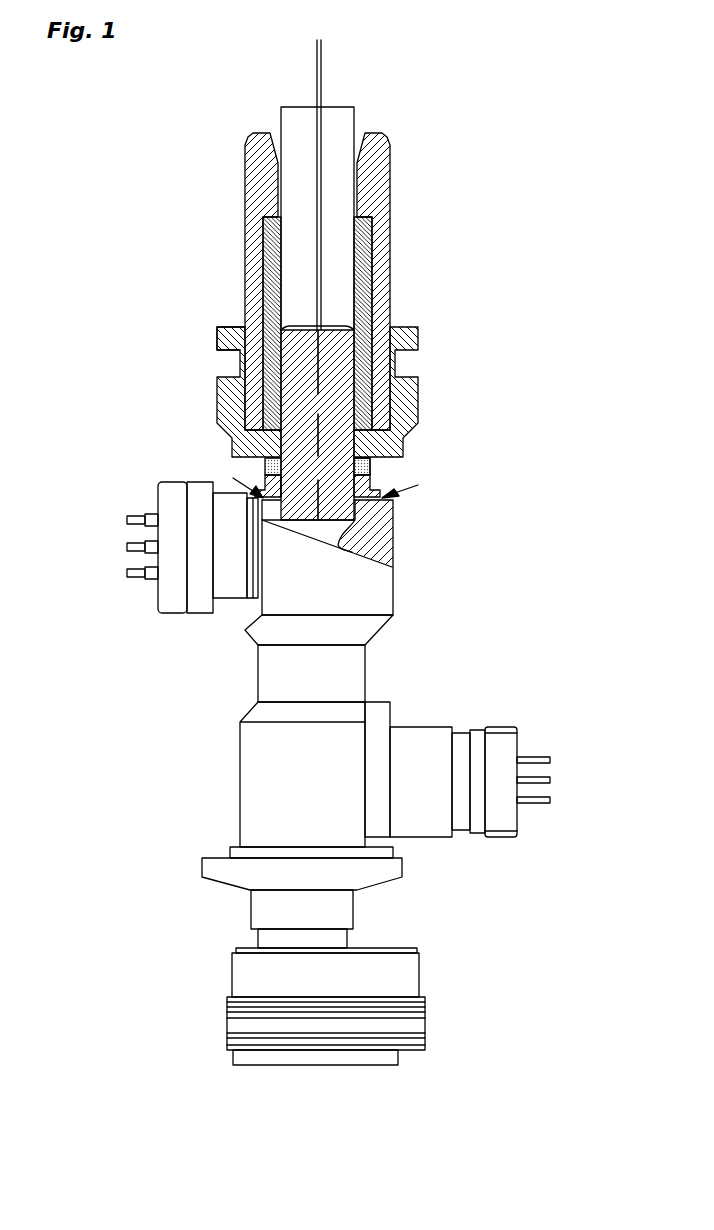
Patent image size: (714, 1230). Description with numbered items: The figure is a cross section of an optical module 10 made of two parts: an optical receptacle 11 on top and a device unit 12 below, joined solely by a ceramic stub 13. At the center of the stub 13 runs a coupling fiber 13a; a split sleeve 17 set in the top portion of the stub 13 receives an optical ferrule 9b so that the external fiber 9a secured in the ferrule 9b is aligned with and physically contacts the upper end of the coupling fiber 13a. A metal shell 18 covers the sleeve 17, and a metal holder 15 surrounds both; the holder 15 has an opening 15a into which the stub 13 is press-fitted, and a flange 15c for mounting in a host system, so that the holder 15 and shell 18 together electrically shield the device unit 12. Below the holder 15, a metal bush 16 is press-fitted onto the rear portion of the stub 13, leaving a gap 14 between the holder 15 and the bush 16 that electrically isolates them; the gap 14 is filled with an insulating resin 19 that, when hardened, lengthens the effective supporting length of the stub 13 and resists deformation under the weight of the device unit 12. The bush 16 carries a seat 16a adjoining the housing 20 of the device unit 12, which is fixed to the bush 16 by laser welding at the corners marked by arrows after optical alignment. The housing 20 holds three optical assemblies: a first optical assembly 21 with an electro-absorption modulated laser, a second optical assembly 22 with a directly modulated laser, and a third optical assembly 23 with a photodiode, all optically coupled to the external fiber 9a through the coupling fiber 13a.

The external fiber 9a is at (315, 72).
The optical ferrule 9b is at (303, 138).
The optical module 10 is at (450, 369).
The optical receptacle 11 is at (95, 143).
The device unit 12 is at (95, 1064).
The stub 13 is at (293, 367).
The coupling fiber 13a is at (323, 350).
The gap 14 is at (265, 462).
The holder 15 is at (417, 412).
The opening 15a is at (352, 443).
The flange 15c is at (217, 330).
The bush 16 is at (373, 490).
The retaining ring bore 16a is at (290, 488).
The sleeve 17 is at (272, 280).
The metal shell 18 is at (257, 210).
The resin 19 is at (373, 463).
The housing 20 is at (378, 572).
The first optical assembly 21 is at (427, 983).
The second optical assembly 22 is at (520, 744).
The third optical assembly 23 is at (173, 616).